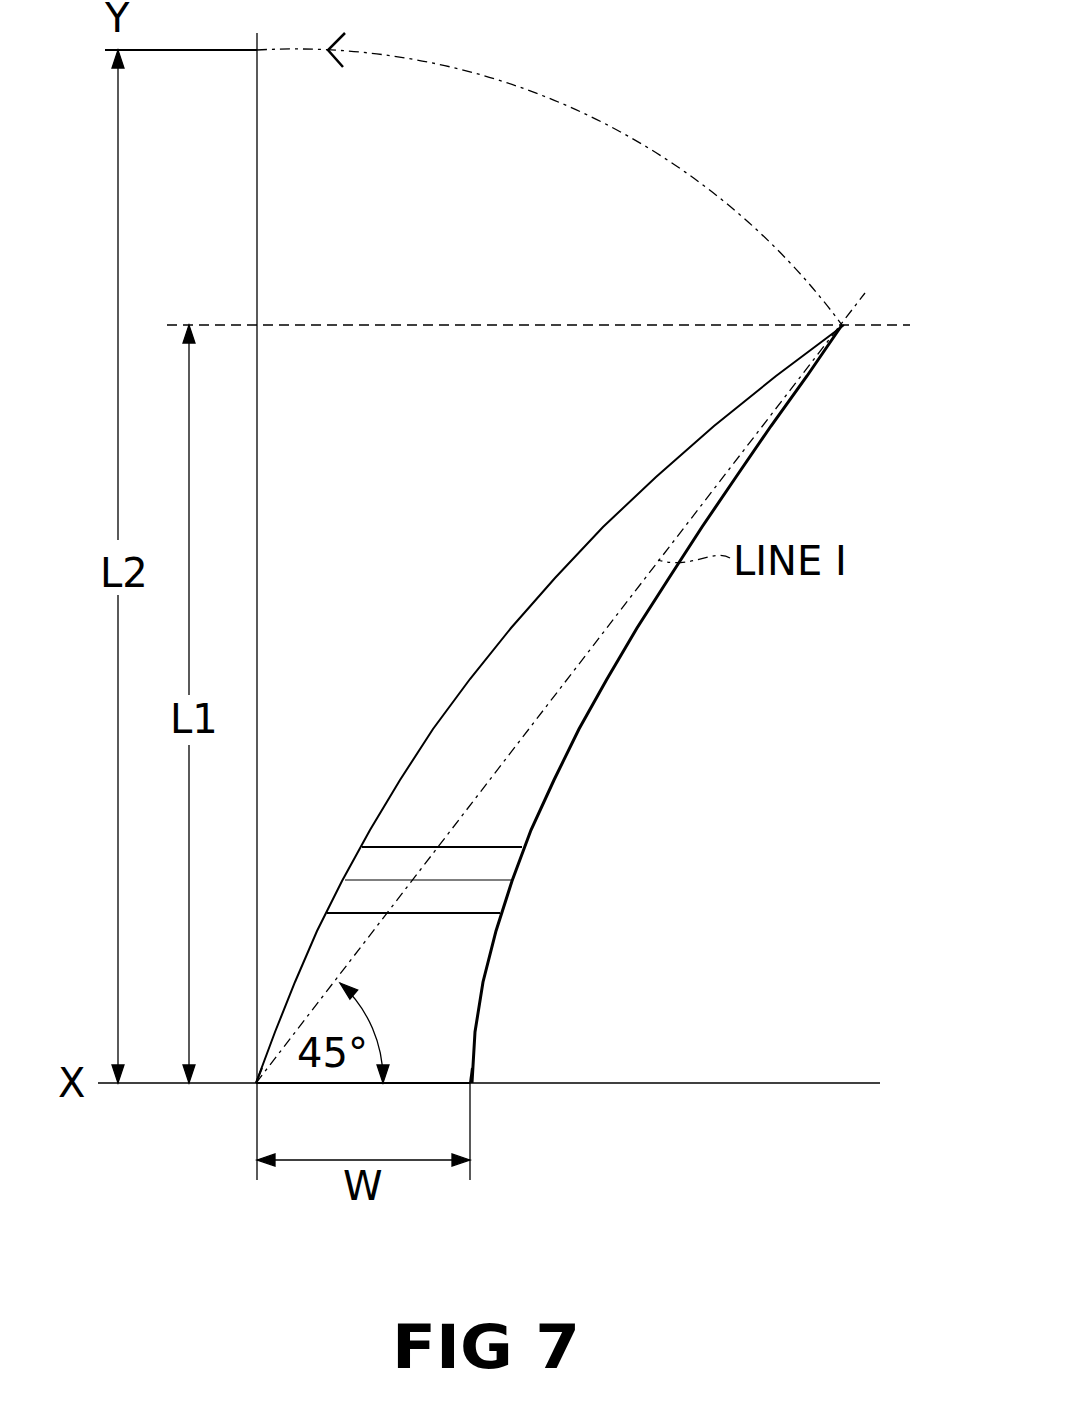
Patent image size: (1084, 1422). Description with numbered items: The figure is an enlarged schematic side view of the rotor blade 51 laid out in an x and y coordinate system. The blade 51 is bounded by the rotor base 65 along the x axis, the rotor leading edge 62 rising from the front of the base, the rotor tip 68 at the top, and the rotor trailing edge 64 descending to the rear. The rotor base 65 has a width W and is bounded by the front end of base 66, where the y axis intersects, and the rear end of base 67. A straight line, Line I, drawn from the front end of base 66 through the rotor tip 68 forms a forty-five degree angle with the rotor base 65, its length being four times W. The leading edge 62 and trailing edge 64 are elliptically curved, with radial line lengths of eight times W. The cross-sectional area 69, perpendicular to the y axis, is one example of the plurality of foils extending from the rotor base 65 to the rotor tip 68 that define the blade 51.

The rotor blade 51 is at (510, 743).
The rotor leading edge 62 is at (462, 663).
The rotor trailing edge 64 is at (614, 693).
The rotor base 65 is at (373, 1083).
The front end of base 66 is at (255, 1083).
The rear end of base 67 is at (473, 1083).
The rotor tip 68 is at (569, 326).
The cross-sectional area 69 is at (492, 898).